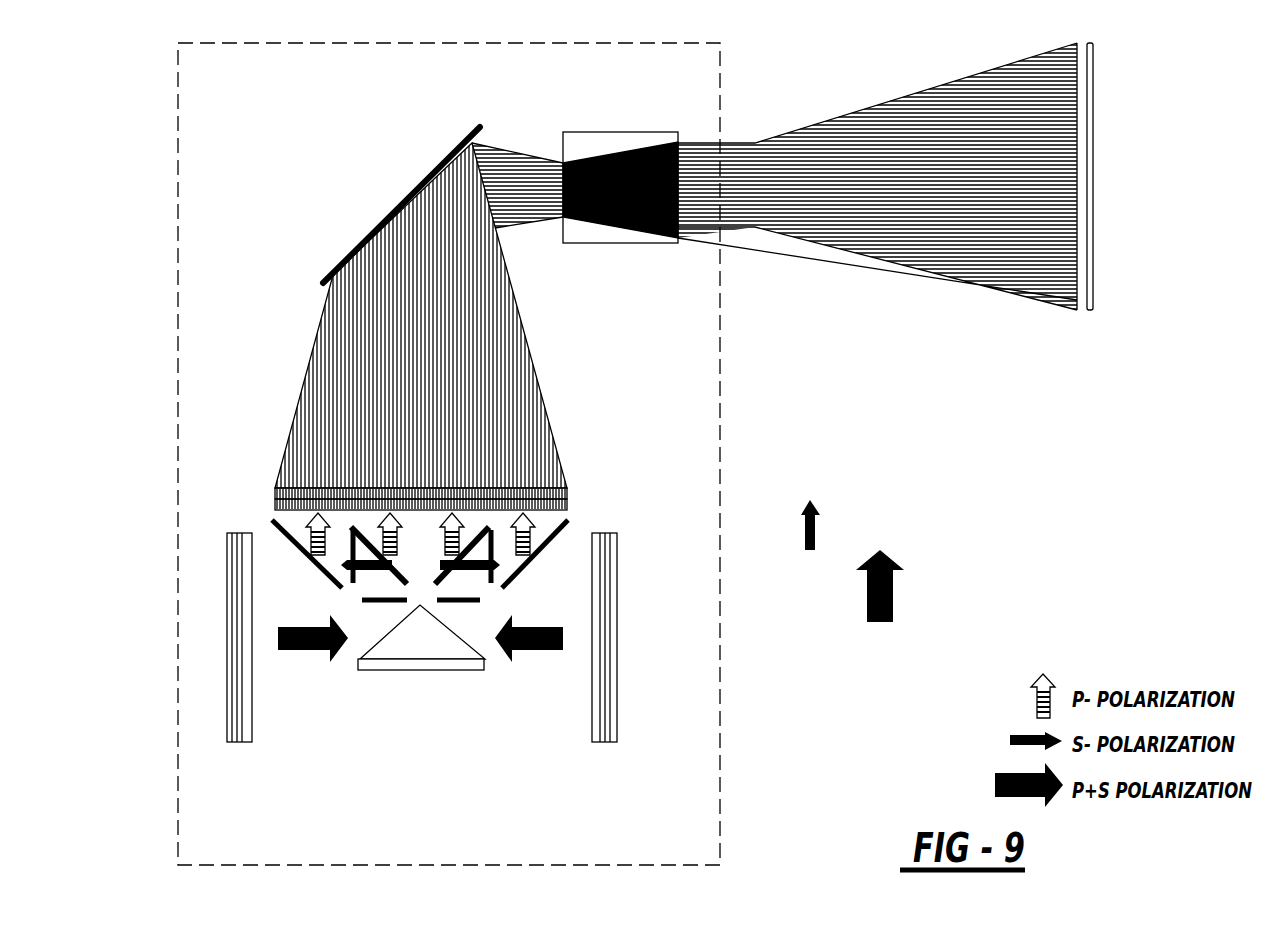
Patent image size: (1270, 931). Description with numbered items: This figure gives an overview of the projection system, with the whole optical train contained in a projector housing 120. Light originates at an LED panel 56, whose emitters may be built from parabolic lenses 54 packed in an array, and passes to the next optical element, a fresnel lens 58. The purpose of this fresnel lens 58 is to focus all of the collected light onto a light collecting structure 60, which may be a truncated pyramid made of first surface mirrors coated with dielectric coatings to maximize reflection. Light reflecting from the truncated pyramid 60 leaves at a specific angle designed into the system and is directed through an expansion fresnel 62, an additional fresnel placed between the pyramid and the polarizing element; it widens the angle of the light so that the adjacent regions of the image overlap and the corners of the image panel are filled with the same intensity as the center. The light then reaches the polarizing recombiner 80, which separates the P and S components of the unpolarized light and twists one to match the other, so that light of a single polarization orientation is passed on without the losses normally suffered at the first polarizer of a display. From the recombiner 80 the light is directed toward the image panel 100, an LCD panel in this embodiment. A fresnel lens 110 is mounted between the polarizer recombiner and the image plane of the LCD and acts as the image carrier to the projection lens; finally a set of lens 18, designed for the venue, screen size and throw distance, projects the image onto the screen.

The set of lens 18 is at (605, 133).
The parabolic lenses 54 is at (230, 618).
The LED panel 56 is at (610, 665).
The fresnel lens 58 is at (250, 533).
The light collecting structure 60 is at (430, 670).
The expansion fresnel 62 is at (370, 605).
The polarizing recombiner 80 is at (533, 563).
The image panel 100 is at (570, 502).
The fresnel lens 110 is at (350, 487).
The projector housing 120 is at (721, 776).